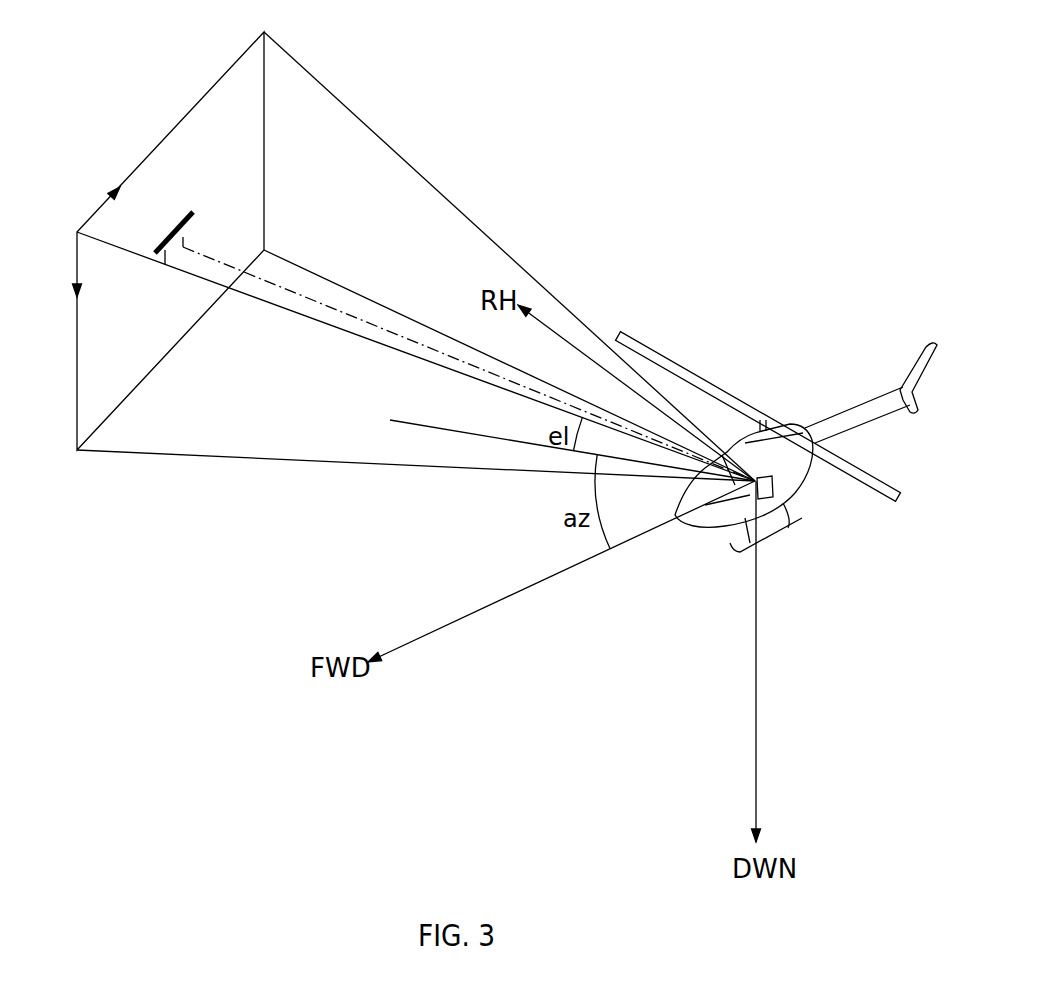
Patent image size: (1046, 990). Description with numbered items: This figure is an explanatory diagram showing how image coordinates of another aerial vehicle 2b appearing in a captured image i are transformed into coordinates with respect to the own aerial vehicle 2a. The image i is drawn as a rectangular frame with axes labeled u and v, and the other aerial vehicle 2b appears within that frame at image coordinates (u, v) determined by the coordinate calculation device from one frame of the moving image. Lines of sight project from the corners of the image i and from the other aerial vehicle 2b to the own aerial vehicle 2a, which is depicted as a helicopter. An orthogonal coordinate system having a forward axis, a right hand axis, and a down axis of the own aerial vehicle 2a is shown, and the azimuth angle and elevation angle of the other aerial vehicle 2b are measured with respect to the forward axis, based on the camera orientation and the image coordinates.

The captured image / image plane i is at (227, 70).
The own aerial vehicle 2a is at (800, 405).
The other aerial vehicle 2b is at (170, 227).